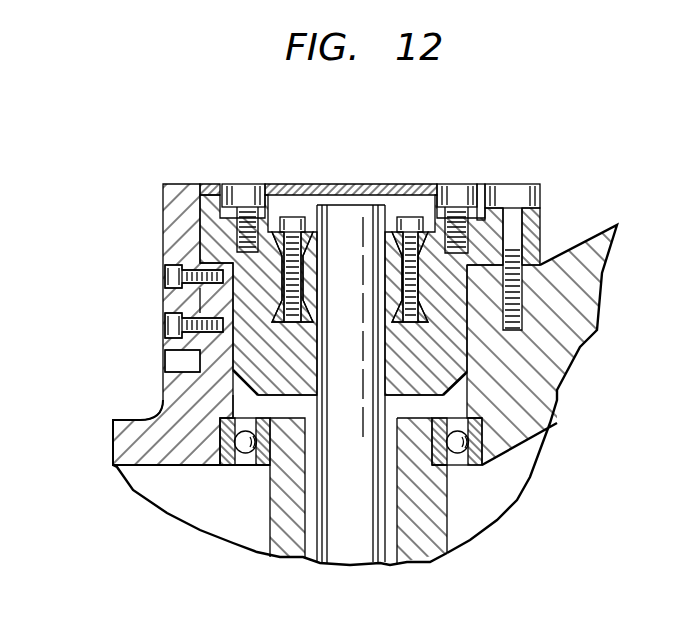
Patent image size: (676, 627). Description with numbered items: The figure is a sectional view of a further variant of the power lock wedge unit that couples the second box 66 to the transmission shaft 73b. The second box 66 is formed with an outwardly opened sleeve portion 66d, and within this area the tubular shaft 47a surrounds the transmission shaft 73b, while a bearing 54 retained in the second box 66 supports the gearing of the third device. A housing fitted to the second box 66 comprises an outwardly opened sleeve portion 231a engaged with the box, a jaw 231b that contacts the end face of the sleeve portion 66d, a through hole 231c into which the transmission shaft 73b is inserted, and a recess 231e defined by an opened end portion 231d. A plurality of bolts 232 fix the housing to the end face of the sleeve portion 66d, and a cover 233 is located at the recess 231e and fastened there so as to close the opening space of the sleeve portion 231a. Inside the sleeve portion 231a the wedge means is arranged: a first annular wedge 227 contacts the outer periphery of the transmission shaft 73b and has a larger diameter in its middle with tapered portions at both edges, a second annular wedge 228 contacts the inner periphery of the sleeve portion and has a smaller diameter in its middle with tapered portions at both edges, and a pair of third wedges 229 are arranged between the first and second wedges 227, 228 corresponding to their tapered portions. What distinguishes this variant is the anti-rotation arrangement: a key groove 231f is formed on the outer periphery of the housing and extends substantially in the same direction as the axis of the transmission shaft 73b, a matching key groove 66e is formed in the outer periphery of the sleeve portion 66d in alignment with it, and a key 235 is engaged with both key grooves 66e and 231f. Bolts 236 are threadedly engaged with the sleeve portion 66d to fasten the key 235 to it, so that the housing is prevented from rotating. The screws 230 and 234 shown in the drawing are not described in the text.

The key 235 is at (168, 184).
The key groove 231f is at (188, 185).
The cap screw 234 is at (245, 188).
The cover 233 is at (277, 185).
The socket head screw 230 is at (293, 218).
The third wedges 229 is at (272, 250).
The bolts 236 is at (167, 278).
The key groove 66e is at (198, 298).
The sleeve portion 66d is at (168, 381).
The second box 66 is at (120, 443).
The bearing 54 is at (233, 442).
The tubular shaft 47a is at (268, 556).
The transmission shaft 73b is at (345, 552).
The first annular wedge 227 is at (312, 265).
The second annular wedge 228 is at (275, 290).
The sleeve portion 231a is at (457, 300).
The jaw 231b is at (541, 198).
The through hole 231c is at (383, 383).
The opened end portion 231d is at (478, 197).
The recess 231e is at (522, 218).
The bolts 232 is at (513, 188).